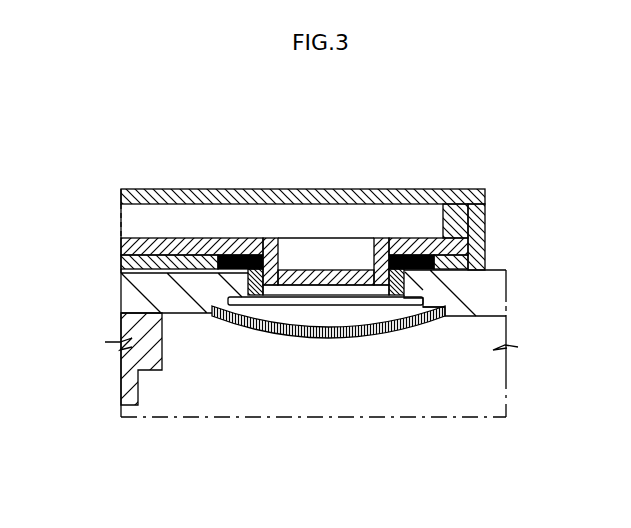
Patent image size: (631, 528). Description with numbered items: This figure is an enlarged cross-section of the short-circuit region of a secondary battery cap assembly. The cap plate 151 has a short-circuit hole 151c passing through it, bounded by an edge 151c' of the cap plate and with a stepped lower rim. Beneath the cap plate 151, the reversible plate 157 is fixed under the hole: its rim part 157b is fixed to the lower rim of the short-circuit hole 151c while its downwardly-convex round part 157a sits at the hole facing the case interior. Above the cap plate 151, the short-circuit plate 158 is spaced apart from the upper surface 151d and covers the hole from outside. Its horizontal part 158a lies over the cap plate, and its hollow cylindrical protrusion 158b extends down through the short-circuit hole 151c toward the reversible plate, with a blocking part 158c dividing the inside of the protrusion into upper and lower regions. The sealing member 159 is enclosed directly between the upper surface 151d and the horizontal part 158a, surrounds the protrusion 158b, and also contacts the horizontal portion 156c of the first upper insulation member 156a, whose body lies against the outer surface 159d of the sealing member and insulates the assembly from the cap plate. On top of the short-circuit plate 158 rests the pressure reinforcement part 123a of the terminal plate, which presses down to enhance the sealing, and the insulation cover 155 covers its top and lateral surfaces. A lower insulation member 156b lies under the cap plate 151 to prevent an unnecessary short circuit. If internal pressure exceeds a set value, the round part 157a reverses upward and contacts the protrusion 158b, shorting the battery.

The pressure reinforcement part 123a is at (207, 212).
The cap plate 151 is at (319, 293).
The short-circuit hole 151c is at (503, 297).
The edge of the cap plate 151c' is at (517, 322).
The upper surface 151d is at (485, 268).
The insulation cover 155 is at (453, 252).
The first upper insulation member 156a is at (485, 212).
The lower insulation member 156b is at (130, 392).
The horizontal portion 156c is at (485, 255).
The reversible plate 157 is at (321, 404).
The round part 157a is at (290, 336).
The rim part 157b is at (215, 317).
The short-circuit plate 158 is at (311, 210).
The horizontal part 158a is at (122, 246).
The protrusion 158b is at (253, 253).
The blocking part 158c is at (362, 278).
The sealing member 159 is at (423, 256).
The outer surface 159d is at (485, 230).